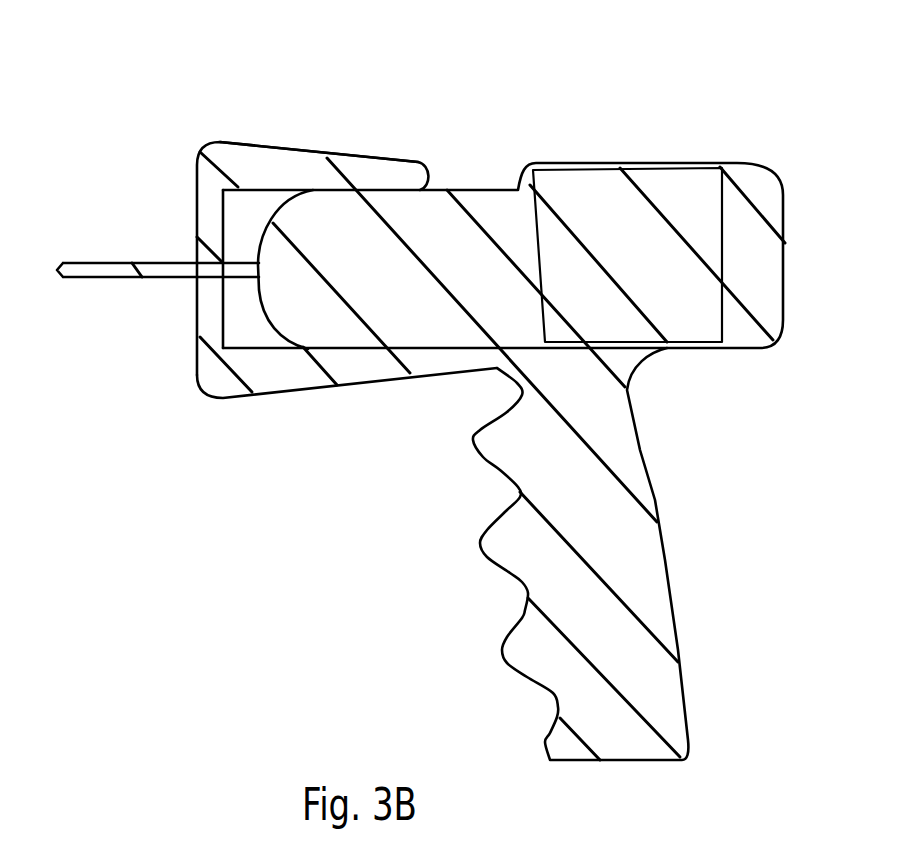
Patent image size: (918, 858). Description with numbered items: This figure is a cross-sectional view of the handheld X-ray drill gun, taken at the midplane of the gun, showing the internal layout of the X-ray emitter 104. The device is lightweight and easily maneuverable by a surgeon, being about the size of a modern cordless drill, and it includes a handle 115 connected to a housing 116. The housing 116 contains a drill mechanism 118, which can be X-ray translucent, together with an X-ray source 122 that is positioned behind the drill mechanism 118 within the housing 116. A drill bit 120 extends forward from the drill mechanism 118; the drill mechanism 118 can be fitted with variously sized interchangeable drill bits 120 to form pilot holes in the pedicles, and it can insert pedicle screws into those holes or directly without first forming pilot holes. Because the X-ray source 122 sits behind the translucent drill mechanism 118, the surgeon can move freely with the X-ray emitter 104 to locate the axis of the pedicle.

The X-ray emitter 104 is at (692, 121).
The handle 115 is at (657, 605).
The housing 116 is at (290, 157).
The drill mechanism 118 is at (321, 213).
The drill bit 120 is at (102, 270).
The X-ray source 122 is at (611, 212).